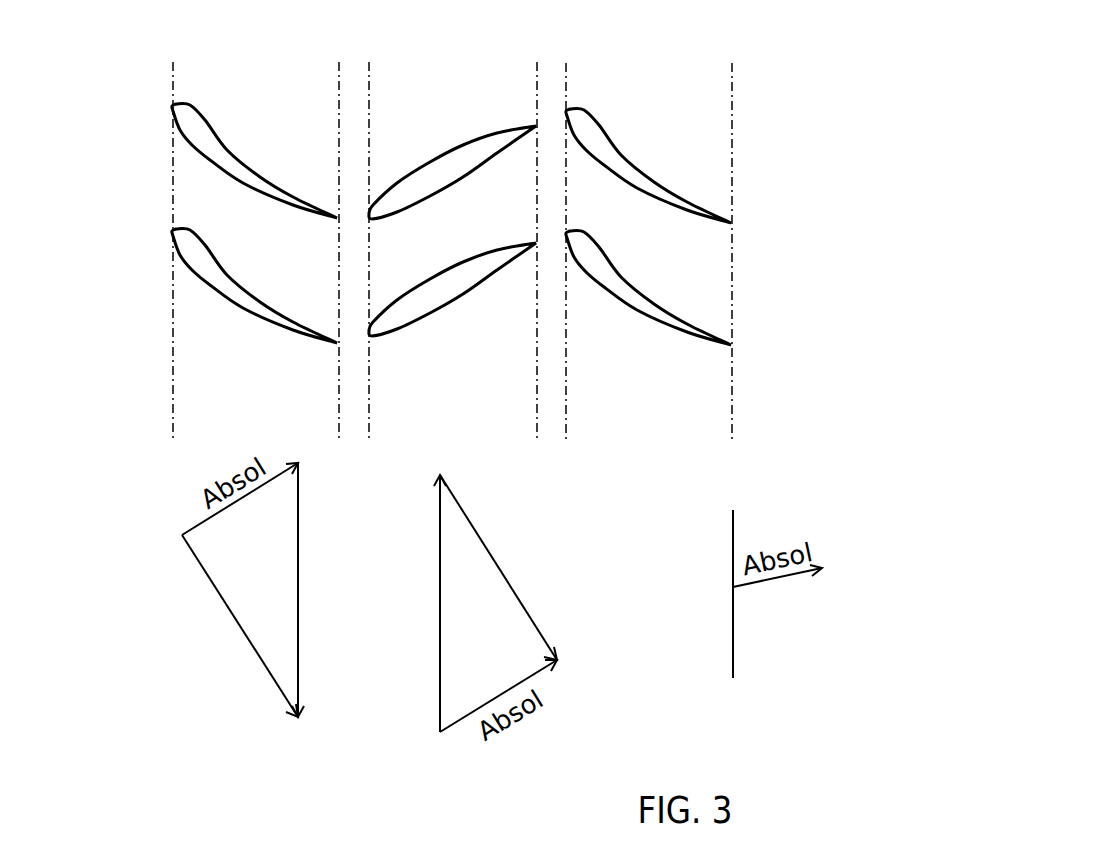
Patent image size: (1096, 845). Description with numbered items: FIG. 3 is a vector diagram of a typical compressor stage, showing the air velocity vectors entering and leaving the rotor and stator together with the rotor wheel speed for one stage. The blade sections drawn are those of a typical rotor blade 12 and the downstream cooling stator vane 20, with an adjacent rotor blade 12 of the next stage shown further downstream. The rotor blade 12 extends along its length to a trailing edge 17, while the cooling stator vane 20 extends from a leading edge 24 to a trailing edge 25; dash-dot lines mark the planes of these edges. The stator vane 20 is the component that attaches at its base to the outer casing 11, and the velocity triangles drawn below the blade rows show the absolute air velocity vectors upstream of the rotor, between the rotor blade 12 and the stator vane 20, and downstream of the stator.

The outer casing 11 is at (172, 232).
The rotor blade 12 is at (207, 260).
The trailing edge 17 is at (732, 343).
The cooling stator vane 20 is at (473, 270).
The leading edge 24 is at (369, 207).
The trailing edge 25 is at (537, 125).